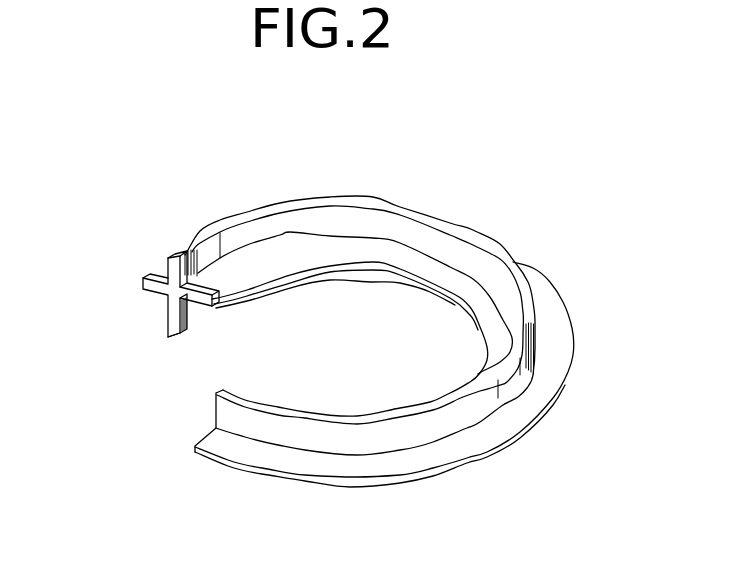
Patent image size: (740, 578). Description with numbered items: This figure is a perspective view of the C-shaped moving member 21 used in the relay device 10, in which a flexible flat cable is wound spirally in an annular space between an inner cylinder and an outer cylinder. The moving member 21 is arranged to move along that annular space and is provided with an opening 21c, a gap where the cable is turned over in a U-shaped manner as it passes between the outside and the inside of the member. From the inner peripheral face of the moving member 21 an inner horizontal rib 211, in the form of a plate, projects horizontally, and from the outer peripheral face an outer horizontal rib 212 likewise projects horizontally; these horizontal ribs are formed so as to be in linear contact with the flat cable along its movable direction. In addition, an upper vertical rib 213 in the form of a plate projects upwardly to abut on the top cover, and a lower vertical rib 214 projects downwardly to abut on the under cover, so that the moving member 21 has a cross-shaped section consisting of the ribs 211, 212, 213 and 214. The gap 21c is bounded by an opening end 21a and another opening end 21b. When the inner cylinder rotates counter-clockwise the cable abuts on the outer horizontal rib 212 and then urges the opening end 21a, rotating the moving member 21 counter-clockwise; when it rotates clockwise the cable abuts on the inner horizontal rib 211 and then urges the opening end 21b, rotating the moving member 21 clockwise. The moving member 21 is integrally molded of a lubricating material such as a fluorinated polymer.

The relay device 10 is at (517, 203).
The moving member 21 is at (395, 195).
The opening end 21a is at (213, 425).
The opening end 21b is at (166, 302).
The opening 21c is at (192, 385).
The inner horizontal rib 211 is at (328, 264).
The outer horizontal rib 212 is at (168, 272).
The upper vertical rib 213 is at (252, 215).
The lower vertical rib 214 is at (188, 318).